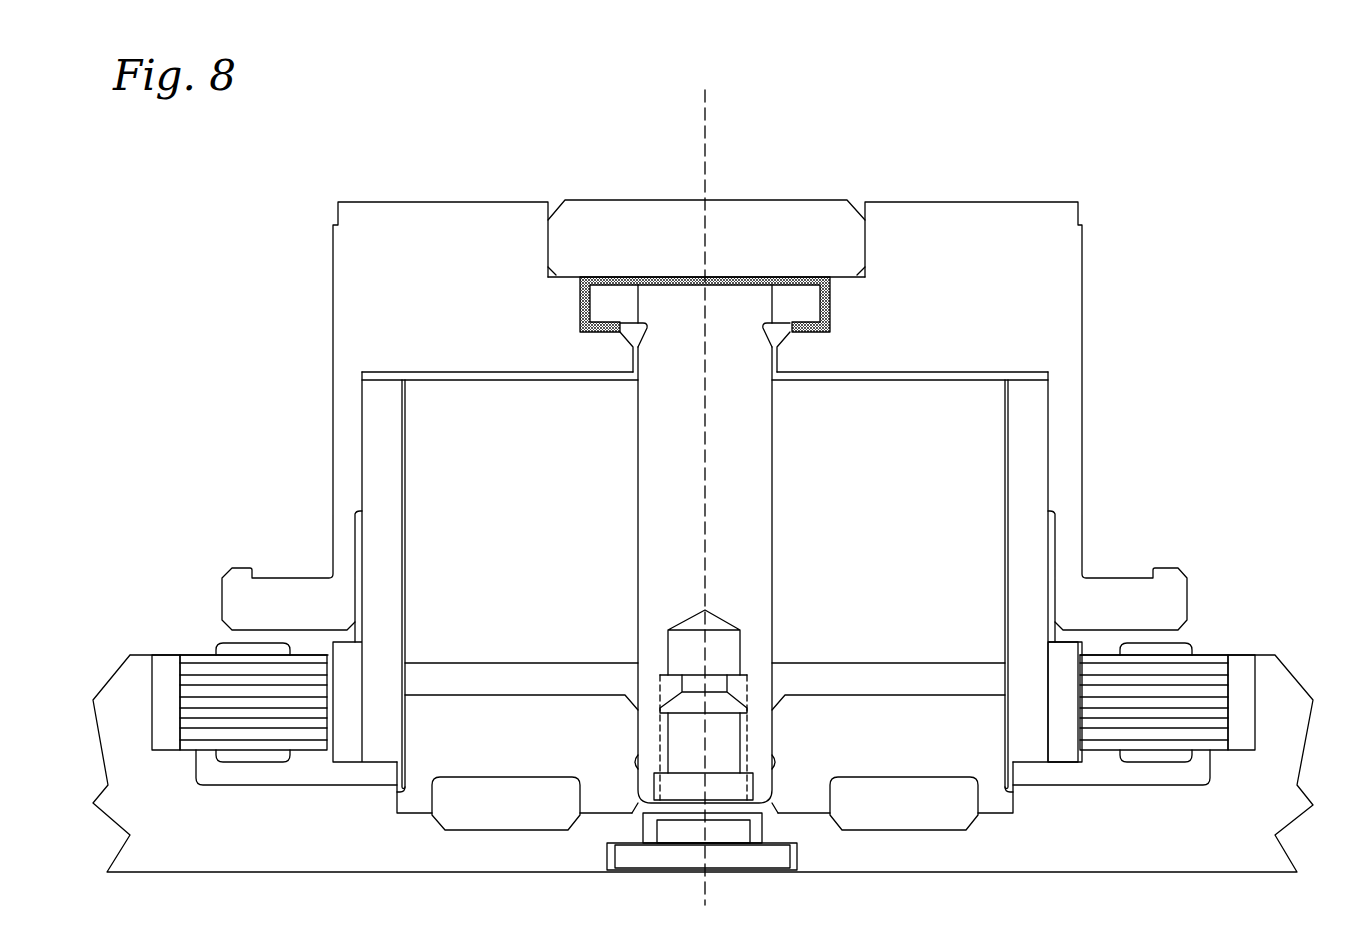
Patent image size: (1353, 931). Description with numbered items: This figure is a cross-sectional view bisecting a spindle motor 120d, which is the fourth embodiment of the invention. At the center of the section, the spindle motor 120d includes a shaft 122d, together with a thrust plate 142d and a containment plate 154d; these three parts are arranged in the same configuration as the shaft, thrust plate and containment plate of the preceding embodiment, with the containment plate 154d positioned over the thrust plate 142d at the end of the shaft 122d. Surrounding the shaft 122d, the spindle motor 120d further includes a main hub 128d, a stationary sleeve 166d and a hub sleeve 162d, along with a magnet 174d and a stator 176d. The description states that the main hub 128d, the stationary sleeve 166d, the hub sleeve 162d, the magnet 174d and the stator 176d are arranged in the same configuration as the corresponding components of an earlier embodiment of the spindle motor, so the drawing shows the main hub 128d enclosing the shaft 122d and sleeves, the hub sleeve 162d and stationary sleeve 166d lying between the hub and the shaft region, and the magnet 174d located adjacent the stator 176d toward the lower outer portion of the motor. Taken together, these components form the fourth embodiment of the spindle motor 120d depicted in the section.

The spindle motor 120d is at (190, 393).
The shaft 122d is at (775, 513).
The main hub 128d is at (330, 367).
The thrust plate 142d is at (810, 308).
The containment plate 154d is at (560, 198).
The hub sleeve 162d is at (1037, 478).
The stationary sleeve 166d is at (985, 525).
The magnet 174d is at (1062, 745).
The stator 176d is at (1212, 654).